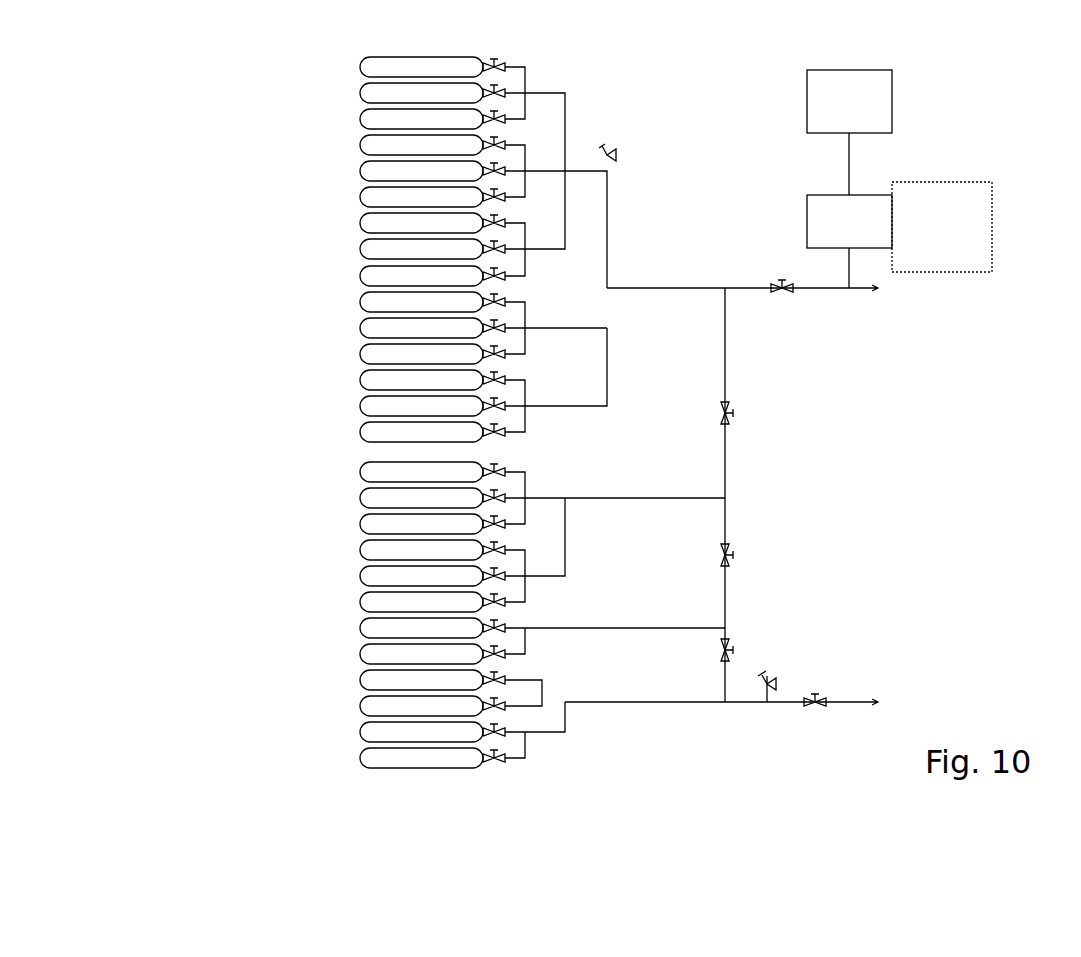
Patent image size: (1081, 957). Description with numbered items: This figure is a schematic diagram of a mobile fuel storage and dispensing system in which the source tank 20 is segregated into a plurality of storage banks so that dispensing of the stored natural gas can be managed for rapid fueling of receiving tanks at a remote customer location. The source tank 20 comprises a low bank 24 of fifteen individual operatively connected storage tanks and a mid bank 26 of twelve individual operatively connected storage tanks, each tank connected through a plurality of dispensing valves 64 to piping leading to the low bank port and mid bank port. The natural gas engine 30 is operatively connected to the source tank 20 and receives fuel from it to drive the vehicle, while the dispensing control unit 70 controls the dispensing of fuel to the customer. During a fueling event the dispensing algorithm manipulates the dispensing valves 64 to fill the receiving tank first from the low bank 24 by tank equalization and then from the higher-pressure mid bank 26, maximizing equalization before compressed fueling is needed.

The source tank 20 is at (279, 272).
The low bank 24 is at (301, 160).
The mid bank 26 is at (301, 550).
The natural gas engine 30 is at (892, 103).
The dispensing valves 64 is at (619, 153).
The dispensing control unit 70 is at (892, 215).